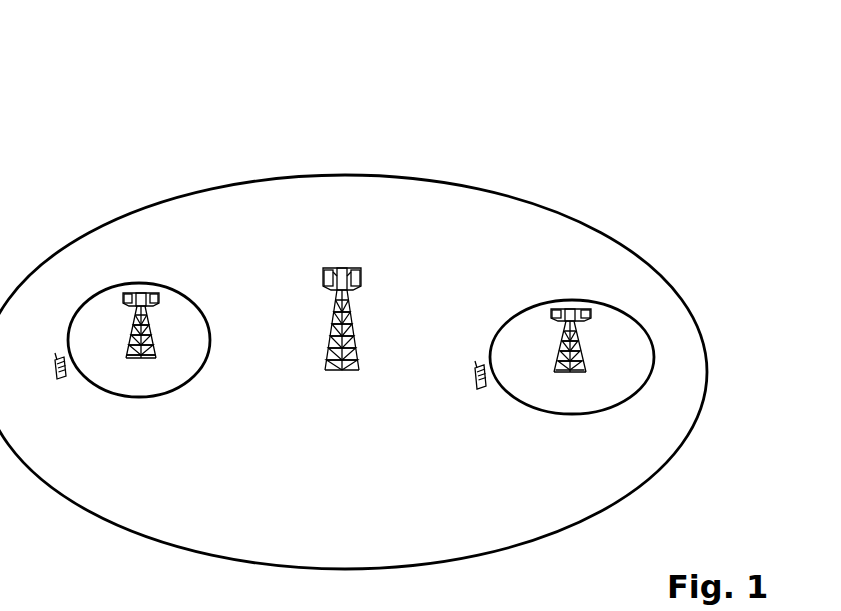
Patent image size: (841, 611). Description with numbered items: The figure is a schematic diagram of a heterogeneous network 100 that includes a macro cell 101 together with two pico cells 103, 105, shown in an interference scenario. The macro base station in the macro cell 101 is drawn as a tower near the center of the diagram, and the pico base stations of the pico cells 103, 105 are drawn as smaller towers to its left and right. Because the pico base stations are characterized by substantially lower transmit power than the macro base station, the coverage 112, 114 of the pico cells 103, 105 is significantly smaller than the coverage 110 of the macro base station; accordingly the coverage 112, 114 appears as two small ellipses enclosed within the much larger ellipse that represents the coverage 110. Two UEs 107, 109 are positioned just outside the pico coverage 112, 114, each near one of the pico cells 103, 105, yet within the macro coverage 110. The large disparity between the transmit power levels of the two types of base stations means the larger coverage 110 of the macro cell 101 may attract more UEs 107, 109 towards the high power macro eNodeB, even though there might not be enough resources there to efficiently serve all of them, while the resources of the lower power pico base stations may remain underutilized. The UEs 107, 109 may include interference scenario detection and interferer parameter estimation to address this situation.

The heterogeneous network 100 is at (176, 78).
The coverage of the macro base station 110 is at (351, 166).
The coverage of the pico cell 112 is at (175, 280).
The coverage of the pico cell 114 is at (508, 310).
The macro cell 101 is at (336, 402).
The pico cell 103 is at (127, 390).
The pico cell 105 is at (556, 405).
The UE 107 is at (58, 398).
The UE 109 is at (478, 400).